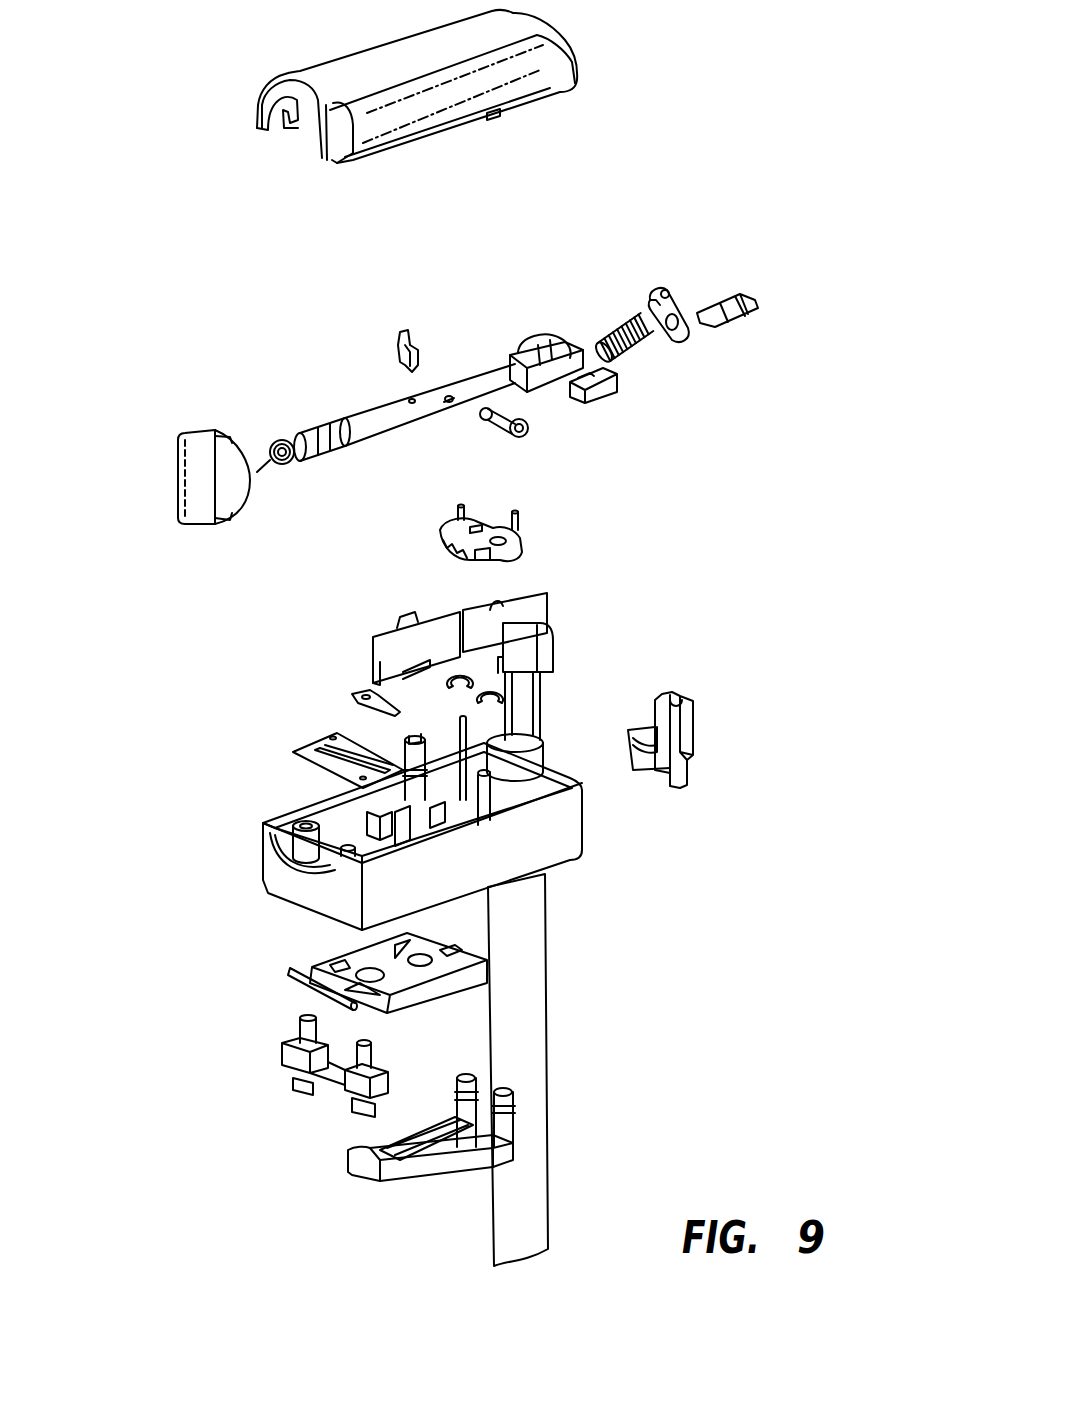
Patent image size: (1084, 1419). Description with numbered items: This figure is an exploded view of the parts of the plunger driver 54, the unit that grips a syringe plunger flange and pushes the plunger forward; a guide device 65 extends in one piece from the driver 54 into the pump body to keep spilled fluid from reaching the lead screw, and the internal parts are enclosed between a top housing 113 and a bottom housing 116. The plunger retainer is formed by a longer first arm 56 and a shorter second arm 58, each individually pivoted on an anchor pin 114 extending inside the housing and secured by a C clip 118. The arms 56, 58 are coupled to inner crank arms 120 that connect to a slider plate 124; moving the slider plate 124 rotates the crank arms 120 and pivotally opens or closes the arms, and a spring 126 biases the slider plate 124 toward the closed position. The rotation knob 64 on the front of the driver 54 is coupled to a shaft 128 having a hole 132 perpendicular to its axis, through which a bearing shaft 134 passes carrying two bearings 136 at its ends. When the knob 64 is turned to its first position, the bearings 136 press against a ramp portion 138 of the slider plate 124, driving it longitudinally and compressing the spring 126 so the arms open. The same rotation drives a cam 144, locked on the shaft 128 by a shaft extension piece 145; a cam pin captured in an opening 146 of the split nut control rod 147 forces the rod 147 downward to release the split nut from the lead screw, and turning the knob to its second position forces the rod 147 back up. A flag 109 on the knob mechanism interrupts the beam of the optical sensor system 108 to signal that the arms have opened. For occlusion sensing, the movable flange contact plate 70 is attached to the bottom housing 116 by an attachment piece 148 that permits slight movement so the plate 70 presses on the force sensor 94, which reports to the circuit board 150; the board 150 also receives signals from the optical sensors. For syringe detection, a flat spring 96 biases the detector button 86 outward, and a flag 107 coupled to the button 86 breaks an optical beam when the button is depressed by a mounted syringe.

The top housing 113 is at (267, 93).
The rotation knob 64 is at (185, 438).
The shaft 128 is at (370, 427).
The hole 132 is at (448, 398).
The flag 109 is at (397, 342).
The ramp portion 138 is at (527, 357).
The slider plate 124 is at (597, 392).
The spring 126 is at (623, 327).
The cam 144 is at (663, 293).
The shaft extension piece 145 is at (747, 295).
The bearing shaft 134 is at (484, 430).
The bearings 136 is at (521, 430).
The inner crank arms 120 is at (470, 553).
The optical sensor system 108 is at (390, 628).
The circuit board 150 is at (387, 655).
The opening 146 is at (523, 628).
The split nut control rod 147 is at (537, 648).
The C clip 118 is at (492, 697).
The spring 96 is at (352, 700).
The detector button 86 is at (400, 733).
The flag 107 is at (452, 748).
The force sensor 94 is at (327, 773).
The anchor pin 114 is at (483, 783).
The bottom housing 116 is at (565, 863).
The guide device 65 is at (517, 1062).
The plunger driver 54 is at (752, 927).
The movable flange contact plate 70 is at (322, 960).
The attachment piece 148 is at (287, 1063).
The second arm 58 is at (433, 1130).
The first arm 56 is at (460, 1152).